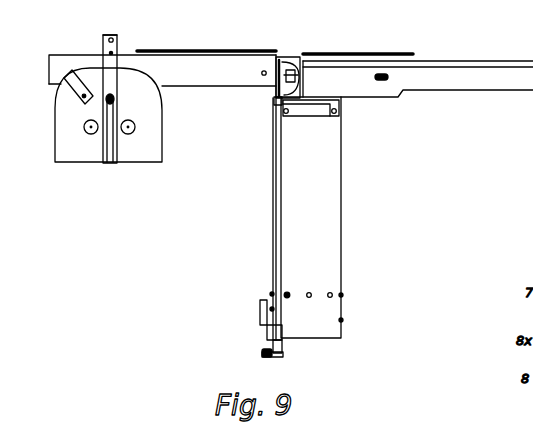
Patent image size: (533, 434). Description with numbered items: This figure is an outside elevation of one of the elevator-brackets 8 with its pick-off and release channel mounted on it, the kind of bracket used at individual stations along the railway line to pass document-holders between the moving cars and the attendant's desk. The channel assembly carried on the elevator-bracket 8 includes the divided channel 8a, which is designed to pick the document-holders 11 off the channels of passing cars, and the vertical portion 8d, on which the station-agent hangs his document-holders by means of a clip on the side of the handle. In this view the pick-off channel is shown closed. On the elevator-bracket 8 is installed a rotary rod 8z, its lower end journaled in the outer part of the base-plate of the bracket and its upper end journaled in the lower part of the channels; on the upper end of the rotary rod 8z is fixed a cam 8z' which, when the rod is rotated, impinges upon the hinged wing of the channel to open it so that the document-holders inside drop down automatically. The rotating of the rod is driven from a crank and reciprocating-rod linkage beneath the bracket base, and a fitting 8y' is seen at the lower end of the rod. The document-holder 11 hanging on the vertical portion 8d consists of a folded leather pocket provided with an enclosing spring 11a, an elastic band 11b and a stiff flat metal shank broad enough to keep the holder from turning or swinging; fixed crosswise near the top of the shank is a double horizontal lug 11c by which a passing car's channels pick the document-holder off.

The elevator-bracket 8 is at (342, 182).
The divided channel 8a is at (460, 60).
The vertical portion 8d is at (78, 54).
The rotary rod 8z is at (247, 219).
The cam 8z' is at (303, 65).
The lower knob assembly 8y' is at (249, 332).
The document-holder 11 is at (163, 116).
The enclosing spring 11a is at (108, 164).
The elastic band 11b is at (66, 78).
The double horizontal lug 11c is at (120, 38).